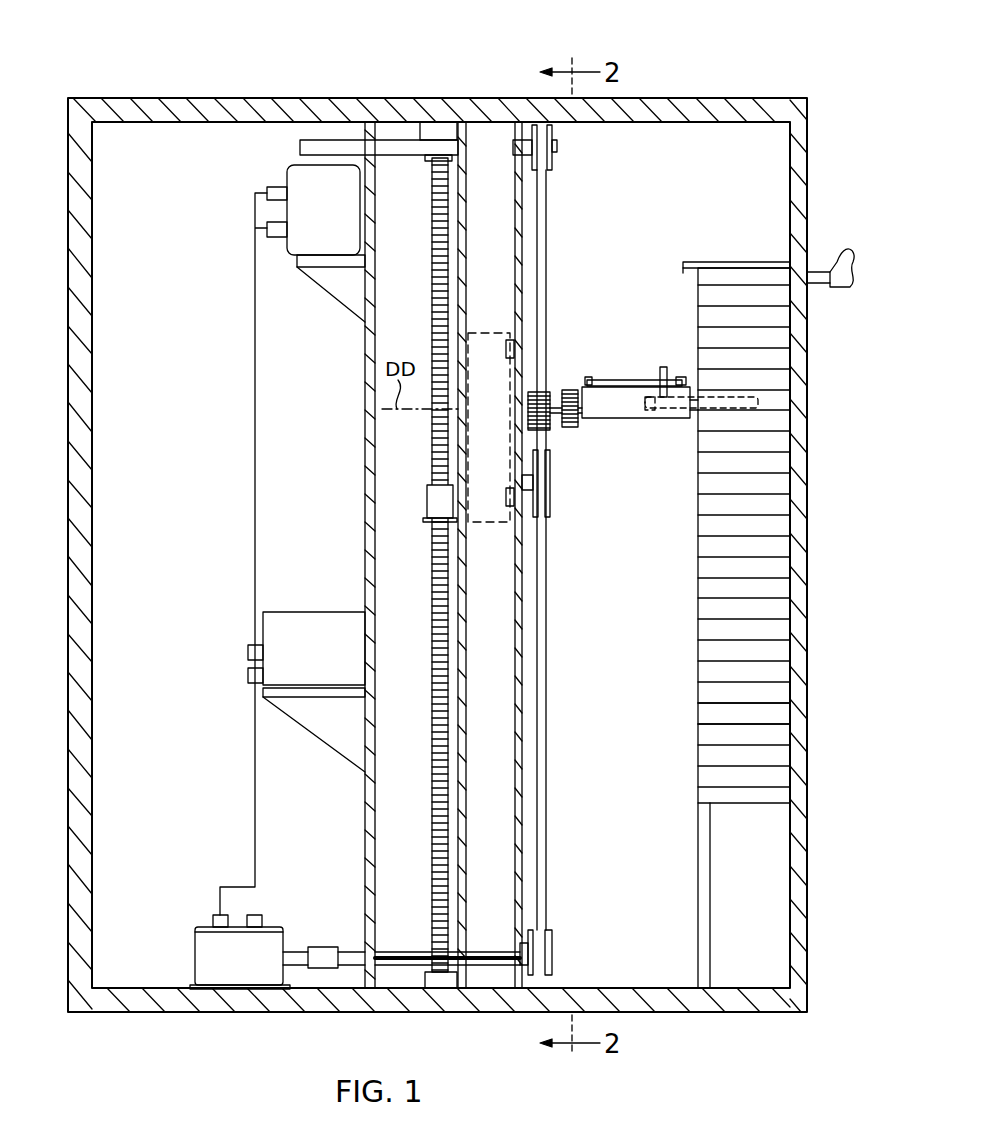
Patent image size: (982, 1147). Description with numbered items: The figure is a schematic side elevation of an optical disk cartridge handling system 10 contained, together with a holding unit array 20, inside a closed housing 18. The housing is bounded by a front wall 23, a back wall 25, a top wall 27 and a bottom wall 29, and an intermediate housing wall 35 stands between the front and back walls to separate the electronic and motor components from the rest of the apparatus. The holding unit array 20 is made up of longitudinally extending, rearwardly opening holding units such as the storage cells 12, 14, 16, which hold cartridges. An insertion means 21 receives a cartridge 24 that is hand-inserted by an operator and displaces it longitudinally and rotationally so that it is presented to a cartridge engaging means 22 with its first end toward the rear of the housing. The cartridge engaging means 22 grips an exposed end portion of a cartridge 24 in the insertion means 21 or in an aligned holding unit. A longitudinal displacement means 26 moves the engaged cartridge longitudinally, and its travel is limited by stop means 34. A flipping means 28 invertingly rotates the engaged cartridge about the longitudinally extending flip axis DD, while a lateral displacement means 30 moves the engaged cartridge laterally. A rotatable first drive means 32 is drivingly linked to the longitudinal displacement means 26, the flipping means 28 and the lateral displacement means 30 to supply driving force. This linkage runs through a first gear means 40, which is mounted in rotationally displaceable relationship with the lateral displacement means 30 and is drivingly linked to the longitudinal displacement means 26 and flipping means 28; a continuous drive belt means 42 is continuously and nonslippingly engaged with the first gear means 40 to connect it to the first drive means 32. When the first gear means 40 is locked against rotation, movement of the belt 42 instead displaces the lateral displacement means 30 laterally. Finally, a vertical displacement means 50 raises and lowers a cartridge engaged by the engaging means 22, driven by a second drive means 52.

The optical disk cartridge handling system 10 is at (664, 188).
The storage cell 12 is at (698, 703).
The storage cell 14 is at (698, 725).
The storage cell 16 is at (695, 412).
The closed housing 18 is at (738, 98).
The holding unit array 20 is at (696, 622).
The insertion means 21 is at (735, 258).
The cartridge engaging means 22 is at (650, 415).
The front wall 23 is at (806, 468).
The cartridge 24 is at (809, 268).
The back wall 25 is at (68, 506).
The longitudinal displacement means 26 is at (640, 382).
The top wall 27 is at (676, 106).
The flipping means 28 is at (598, 420).
The bottom wall 29 is at (662, 1010).
The lateral displacement means 30 is at (486, 334).
The first drive means 32 is at (283, 923).
The stop means 34 is at (590, 377).
The intermediate housing wall 35 is at (365, 428).
The first gear means 40 is at (527, 422).
The continuous drive belt means 42 is at (552, 790).
The vertical displacement means 50 is at (432, 592).
The second drive means 52 is at (283, 176).